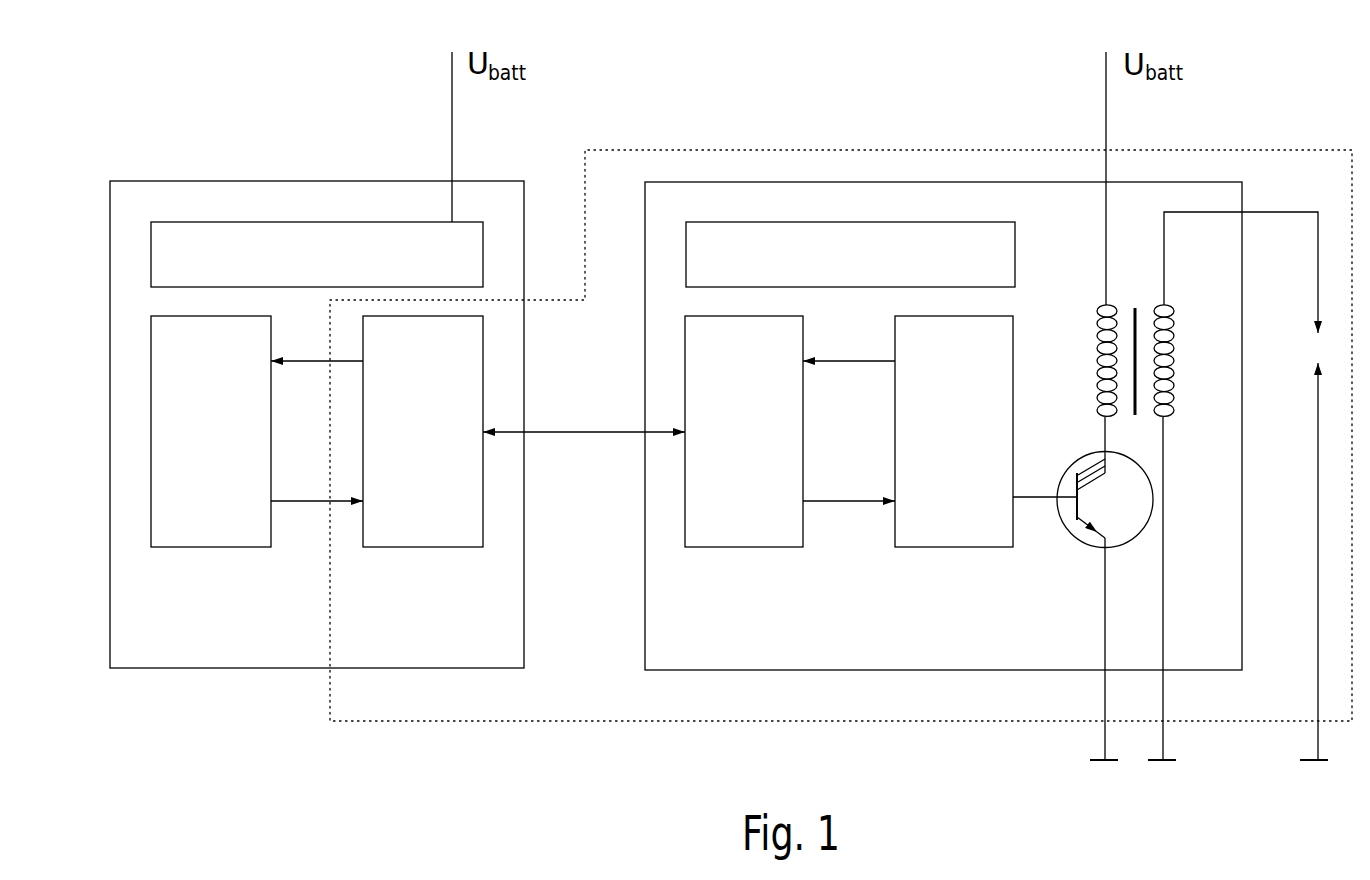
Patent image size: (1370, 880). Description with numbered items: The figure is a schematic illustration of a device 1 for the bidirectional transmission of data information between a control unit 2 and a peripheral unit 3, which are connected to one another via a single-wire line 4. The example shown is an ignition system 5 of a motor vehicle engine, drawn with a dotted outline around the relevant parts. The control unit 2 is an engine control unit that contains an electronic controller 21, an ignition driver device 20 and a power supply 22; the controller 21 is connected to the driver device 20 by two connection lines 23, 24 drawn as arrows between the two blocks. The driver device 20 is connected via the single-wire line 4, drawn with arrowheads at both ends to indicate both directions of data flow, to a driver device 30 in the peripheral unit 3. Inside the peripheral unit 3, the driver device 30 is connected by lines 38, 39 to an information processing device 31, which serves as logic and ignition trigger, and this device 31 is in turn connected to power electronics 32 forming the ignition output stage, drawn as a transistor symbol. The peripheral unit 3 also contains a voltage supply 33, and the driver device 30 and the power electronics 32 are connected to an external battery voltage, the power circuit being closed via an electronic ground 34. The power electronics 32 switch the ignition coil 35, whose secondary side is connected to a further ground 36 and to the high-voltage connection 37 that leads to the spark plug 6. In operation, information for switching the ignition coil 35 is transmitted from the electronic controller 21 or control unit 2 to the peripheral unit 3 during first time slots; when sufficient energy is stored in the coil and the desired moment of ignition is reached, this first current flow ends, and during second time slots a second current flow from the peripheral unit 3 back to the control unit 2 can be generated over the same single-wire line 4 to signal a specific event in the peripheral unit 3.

The device 1 is at (253, 778).
The control unit 2 is at (267, 173).
The peripheral unit 3 is at (787, 177).
The single-wire line 4 is at (585, 433).
The ignition system 5 is at (588, 727).
The spark plug 6 is at (1308, 350).
The driver device 20 is at (409, 450).
The electronic controller 21 is at (197, 450).
The power supply 22 is at (304, 272).
The data line 23 is at (310, 360).
The data line 24 is at (310, 500).
The driver device 30 is at (730, 450).
The information processing device 31 is at (940, 450).
The power electronics 32 is at (1122, 513).
The voltage supply 33 is at (836, 272).
The electronic ground 34 is at (1097, 762).
The ignition coil 35 is at (1178, 383).
The ground connection 36 is at (1167, 762).
The high-voltage connection 37 is at (1280, 213).
The signal line 38 is at (857, 360).
The signal line 39 is at (848, 500).